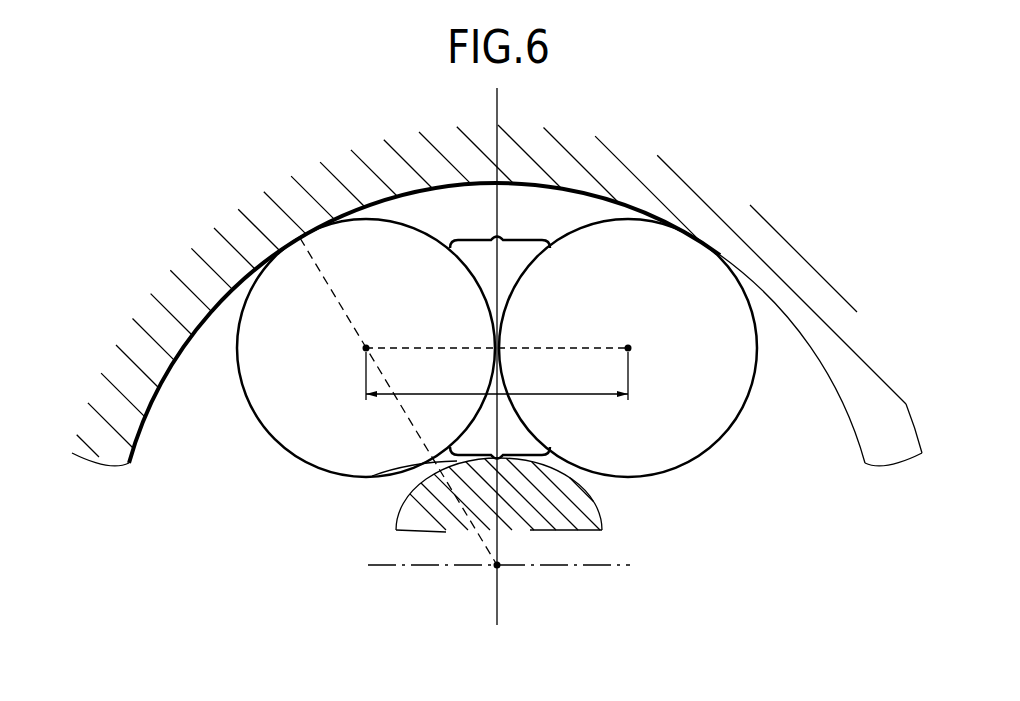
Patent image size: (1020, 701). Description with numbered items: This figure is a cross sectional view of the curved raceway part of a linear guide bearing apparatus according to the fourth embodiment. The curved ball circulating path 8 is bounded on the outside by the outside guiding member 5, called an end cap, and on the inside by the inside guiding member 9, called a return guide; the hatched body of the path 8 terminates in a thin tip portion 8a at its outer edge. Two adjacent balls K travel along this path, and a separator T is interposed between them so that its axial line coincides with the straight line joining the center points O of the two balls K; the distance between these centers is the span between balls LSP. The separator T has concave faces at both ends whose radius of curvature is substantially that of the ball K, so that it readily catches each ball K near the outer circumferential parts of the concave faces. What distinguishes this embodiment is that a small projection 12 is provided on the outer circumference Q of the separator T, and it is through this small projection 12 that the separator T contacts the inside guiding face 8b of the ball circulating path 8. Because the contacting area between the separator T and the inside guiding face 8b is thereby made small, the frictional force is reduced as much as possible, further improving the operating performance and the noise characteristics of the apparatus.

The outside guiding member 5 is at (828, 350).
The curved ball circulating path 8 is at (759, 489).
The tip end portion of cam body 8a is at (847, 413).
The inside guiding face 8b is at (588, 492).
The inside guiding member 9 is at (425, 527).
The small projection 12 is at (490, 236).
The ball K is at (258, 273).
The separator T is at (517, 247).
The center point of ball O is at (502, 349).
The outer circumference of separator Q is at (457, 461).
The span between balls LSP is at (497, 376).